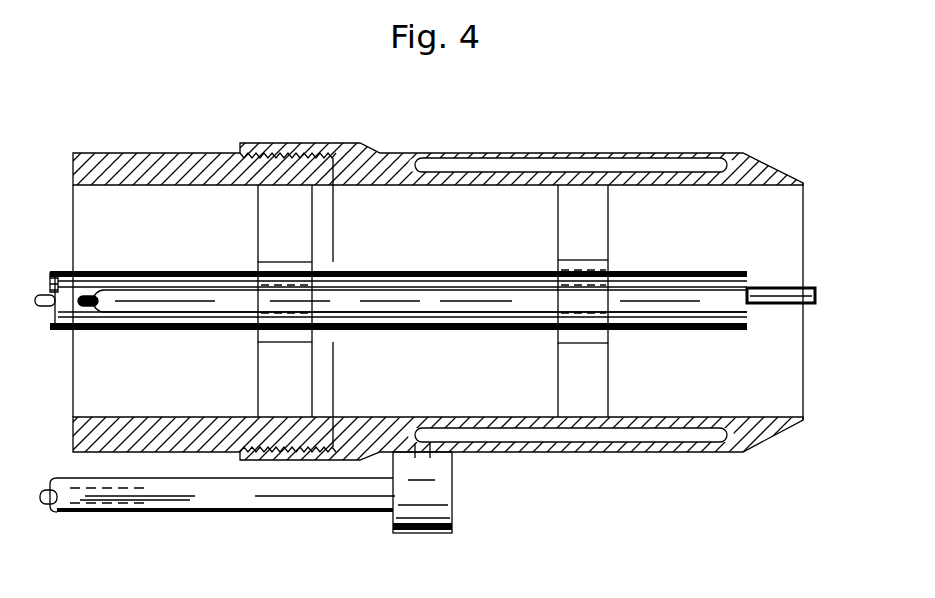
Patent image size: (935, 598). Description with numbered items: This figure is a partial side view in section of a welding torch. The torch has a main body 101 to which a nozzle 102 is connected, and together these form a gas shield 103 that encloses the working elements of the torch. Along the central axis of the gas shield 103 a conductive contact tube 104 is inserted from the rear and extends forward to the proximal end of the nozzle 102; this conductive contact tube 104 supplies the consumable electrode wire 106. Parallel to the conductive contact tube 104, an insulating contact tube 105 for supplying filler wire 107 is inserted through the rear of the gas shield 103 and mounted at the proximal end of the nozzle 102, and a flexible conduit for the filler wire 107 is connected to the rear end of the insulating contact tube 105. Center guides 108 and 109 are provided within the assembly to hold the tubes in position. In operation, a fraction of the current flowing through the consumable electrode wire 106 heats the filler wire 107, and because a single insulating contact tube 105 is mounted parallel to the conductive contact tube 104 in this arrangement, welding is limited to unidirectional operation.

The main body 101 is at (157, 160).
The nozzle 102 is at (480, 155).
The gas shield 103 is at (456, 240).
The conductive contact tube 104 is at (82, 273).
The insulating contact tube 105 is at (178, 298).
The consumable electrode wire 106 is at (777, 288).
The filler wire 107 is at (790, 305).
The center guide 108 is at (600, 220).
The center guide 109 is at (262, 234).